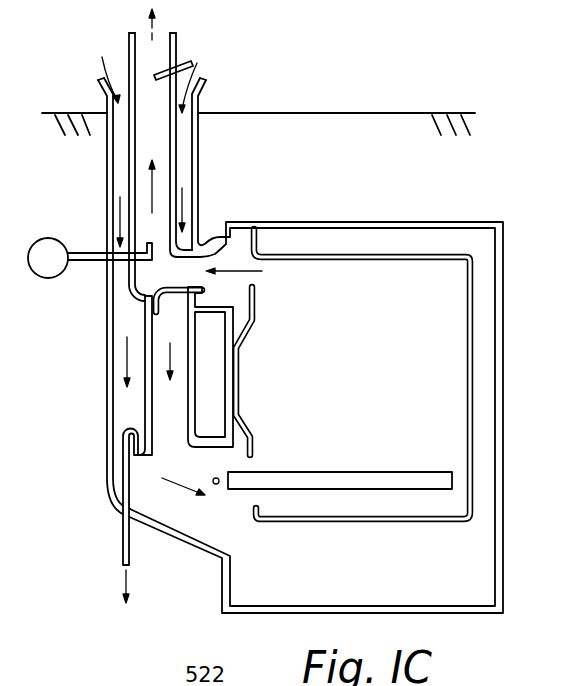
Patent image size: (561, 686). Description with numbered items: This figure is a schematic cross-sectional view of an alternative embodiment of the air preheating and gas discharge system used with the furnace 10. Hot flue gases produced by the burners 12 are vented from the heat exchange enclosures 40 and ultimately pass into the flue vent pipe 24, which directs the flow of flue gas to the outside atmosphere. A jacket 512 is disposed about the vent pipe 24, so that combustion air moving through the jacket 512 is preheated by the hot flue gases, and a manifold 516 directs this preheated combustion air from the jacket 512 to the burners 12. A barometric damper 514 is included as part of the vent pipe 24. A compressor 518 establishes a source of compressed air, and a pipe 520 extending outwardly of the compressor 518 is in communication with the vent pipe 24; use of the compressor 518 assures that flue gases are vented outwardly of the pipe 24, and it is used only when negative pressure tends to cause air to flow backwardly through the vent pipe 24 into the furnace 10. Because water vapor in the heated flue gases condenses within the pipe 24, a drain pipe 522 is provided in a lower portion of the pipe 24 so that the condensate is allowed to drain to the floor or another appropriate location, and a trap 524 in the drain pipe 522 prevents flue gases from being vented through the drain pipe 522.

The furnace 10 is at (418, 199).
The burners 12 is at (315, 480).
The flue vent pipe 24 is at (128, 42).
The heat exchange enclosures 40 is at (337, 230).
The jacket 512 is at (199, 166).
The barometric damper 514 is at (192, 61).
The manifold 516 is at (106, 413).
The compressor 518 is at (44, 238).
The pipe 520 is at (95, 260).
The drain pipe 522 is at (127, 527).
The trap 524 is at (148, 453).